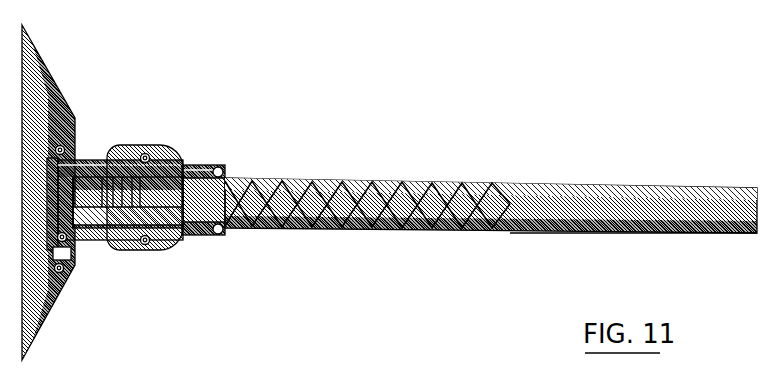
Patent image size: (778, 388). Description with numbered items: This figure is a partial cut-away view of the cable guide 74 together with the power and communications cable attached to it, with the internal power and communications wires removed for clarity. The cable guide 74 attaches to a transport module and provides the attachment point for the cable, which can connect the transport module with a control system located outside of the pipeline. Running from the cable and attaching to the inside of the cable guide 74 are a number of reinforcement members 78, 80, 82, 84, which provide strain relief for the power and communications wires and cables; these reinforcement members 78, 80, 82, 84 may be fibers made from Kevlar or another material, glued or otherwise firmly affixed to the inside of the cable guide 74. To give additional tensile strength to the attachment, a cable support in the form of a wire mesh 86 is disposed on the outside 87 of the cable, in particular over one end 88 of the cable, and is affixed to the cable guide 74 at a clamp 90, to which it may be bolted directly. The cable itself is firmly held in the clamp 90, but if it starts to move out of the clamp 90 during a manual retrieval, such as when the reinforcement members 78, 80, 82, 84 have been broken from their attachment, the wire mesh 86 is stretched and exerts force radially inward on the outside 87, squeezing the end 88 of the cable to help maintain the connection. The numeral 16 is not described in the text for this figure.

The cable guide 74 is at (62, 88).
The reinforcement member 82 is at (85, 150).
The reinforcement member 84 is at (107, 155).
The reinforcement member 78 is at (86, 238).
The reinforcement member 80 is at (98, 238).
The clamp 90 is at (202, 163).
The tube 16 is at (596, 187).
The outside of the cable 87 is at (578, 235).
The wire mesh 86 is at (313, 178).
The end of the cable 88 is at (408, 182).